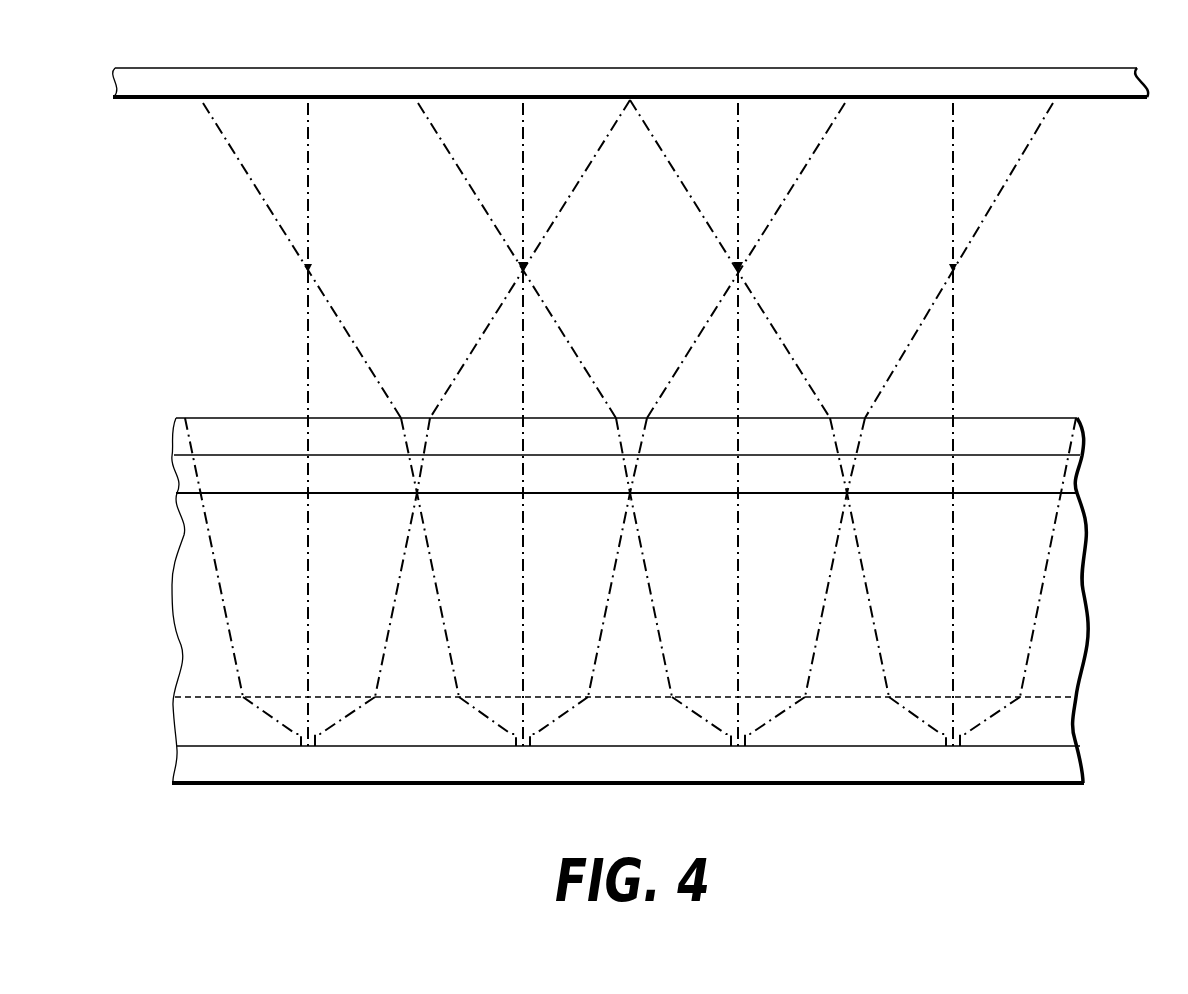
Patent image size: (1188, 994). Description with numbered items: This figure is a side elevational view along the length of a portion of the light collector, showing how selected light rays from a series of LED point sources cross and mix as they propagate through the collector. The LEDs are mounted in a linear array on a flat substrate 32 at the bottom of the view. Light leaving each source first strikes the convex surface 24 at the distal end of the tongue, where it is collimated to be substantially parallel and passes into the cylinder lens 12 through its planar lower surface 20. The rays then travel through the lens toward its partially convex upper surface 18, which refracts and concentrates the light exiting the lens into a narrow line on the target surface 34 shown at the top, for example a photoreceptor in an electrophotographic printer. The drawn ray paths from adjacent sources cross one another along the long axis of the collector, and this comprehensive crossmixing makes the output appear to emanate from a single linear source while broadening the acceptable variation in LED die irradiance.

The target surface 34 is at (1113, 71).
The partially convex upper surface 18 is at (1076, 408).
The cylinder lens 12 is at (1085, 431).
The planar lower surface 20 is at (1076, 506).
The convex surface 24 is at (1080, 692).
The substrate 32 is at (1080, 749).